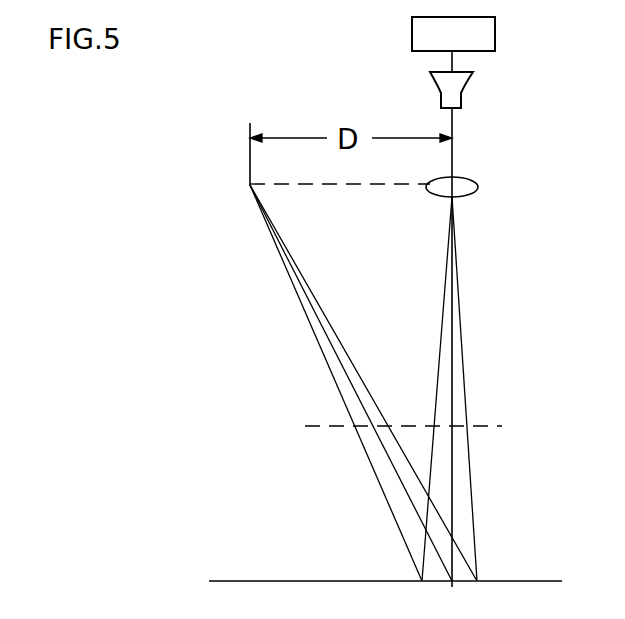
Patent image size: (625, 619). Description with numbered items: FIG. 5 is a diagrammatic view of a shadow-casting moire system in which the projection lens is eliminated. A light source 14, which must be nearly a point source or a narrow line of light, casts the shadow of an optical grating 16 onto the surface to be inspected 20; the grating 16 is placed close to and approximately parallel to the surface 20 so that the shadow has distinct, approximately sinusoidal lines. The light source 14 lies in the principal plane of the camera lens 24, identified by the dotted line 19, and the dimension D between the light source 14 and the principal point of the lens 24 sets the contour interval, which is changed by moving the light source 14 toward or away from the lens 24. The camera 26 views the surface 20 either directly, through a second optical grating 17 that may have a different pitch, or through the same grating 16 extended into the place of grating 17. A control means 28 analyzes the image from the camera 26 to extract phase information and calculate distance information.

The light source 14 is at (246, 180).
The optical grating 16 is at (332, 427).
The optical grating 17 is at (492, 427).
The dotted line 19 is at (363, 187).
The surface to be inspected 20 is at (283, 580).
The camera lens 24 is at (478, 190).
The camera 26 is at (456, 95).
The control means 28 is at (486, 36).